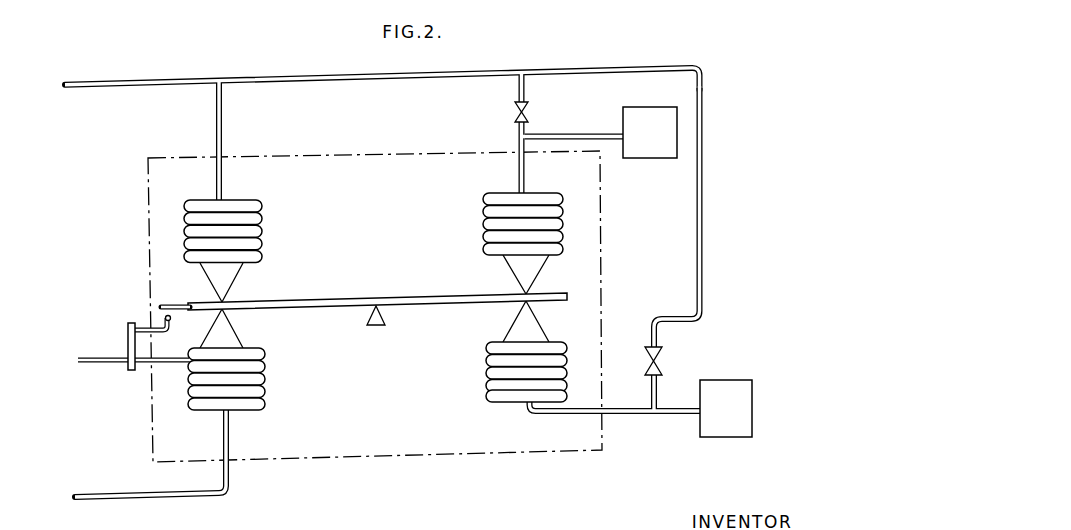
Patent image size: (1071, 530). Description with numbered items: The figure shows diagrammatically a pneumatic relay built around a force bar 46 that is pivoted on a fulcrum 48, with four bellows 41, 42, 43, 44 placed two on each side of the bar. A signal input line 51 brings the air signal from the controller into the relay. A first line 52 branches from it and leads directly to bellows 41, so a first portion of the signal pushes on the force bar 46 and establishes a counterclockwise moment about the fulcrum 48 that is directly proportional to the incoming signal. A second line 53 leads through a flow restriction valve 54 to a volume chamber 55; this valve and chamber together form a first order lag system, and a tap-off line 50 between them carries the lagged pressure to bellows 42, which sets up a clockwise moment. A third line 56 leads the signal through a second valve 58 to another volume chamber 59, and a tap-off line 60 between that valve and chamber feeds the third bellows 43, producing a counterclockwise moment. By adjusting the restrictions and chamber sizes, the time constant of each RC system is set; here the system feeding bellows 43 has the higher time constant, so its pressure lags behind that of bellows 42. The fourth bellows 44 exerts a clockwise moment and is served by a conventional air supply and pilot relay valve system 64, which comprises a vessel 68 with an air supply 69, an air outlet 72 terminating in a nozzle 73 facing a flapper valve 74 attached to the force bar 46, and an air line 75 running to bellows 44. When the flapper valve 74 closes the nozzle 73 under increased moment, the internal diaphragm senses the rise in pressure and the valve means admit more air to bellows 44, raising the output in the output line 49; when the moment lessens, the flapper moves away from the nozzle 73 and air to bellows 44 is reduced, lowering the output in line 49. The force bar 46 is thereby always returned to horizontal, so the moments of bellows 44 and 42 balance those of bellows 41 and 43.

The bellows 41 is at (262, 233).
The bellows 42 is at (486, 223).
The bellows 43 is at (487, 369).
The bellows 44 is at (265, 376).
The force bar 46 is at (358, 300).
The fulcrum 48 is at (376, 325).
The output line 49 is at (183, 497).
The tap-off line 50 is at (518, 168).
The signal input line 51 is at (135, 82).
The first line 52 is at (216, 118).
The second line 53 is at (512, 77).
The valve 54 is at (516, 106).
The volume chamber 55 is at (640, 114).
The third line 56 is at (703, 232).
The second valve 58 is at (661, 366).
The volume chamber 59 is at (733, 387).
The tap-off line 60 is at (656, 414).
The air supply and pilot relay valve system 64 is at (141, 310).
The vessel 68 is at (128, 324).
The air supply 69 is at (102, 365).
The air outlet 72 is at (158, 333).
The nozzle 73 is at (166, 315).
The flapper valve 74 is at (170, 305).
The air line 75 is at (161, 365).